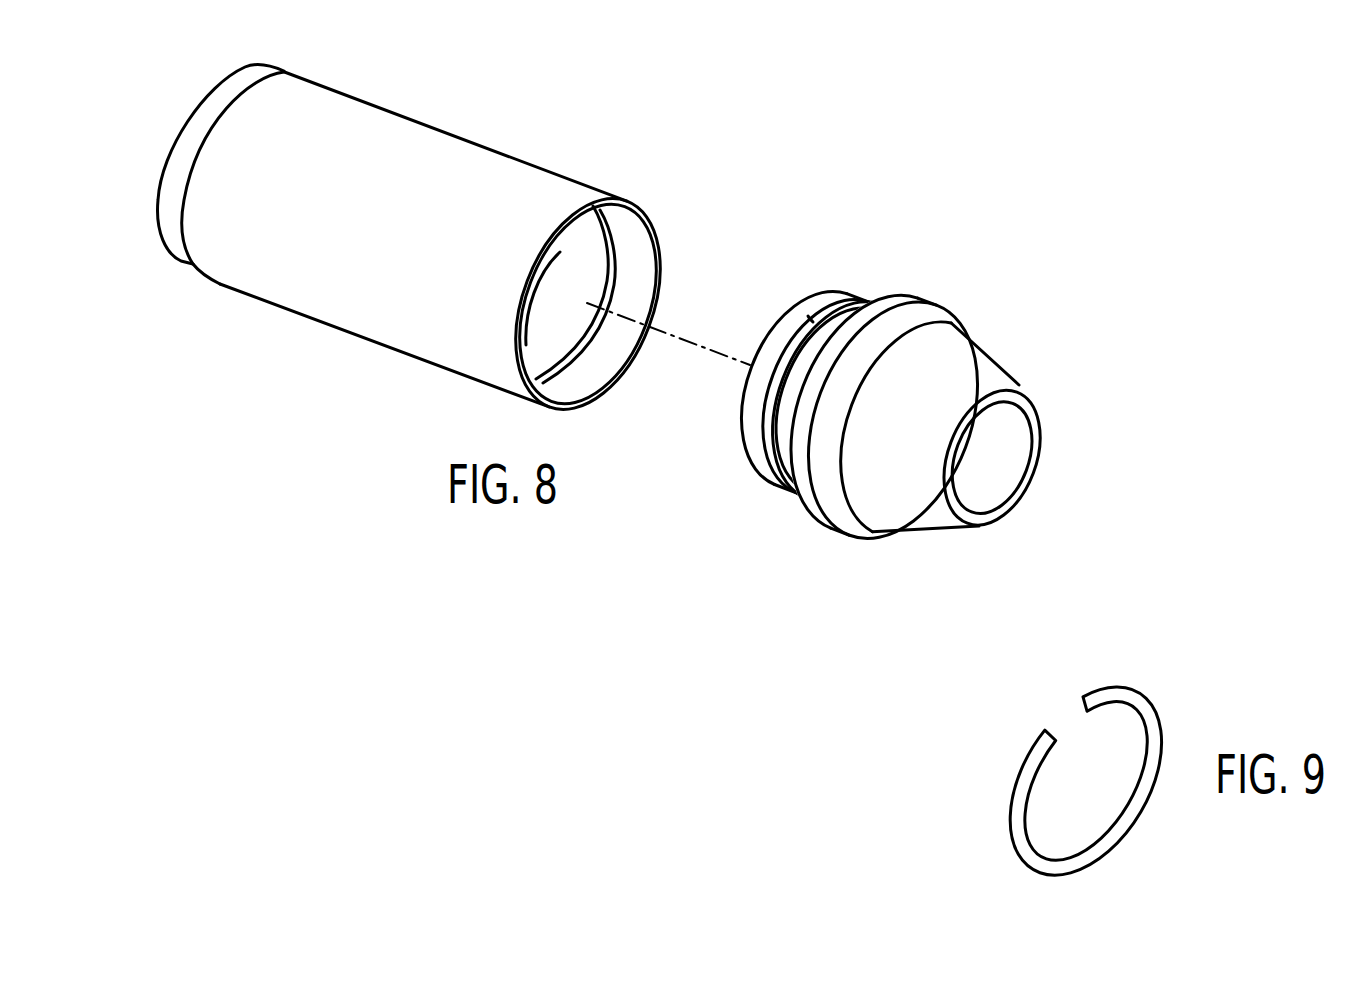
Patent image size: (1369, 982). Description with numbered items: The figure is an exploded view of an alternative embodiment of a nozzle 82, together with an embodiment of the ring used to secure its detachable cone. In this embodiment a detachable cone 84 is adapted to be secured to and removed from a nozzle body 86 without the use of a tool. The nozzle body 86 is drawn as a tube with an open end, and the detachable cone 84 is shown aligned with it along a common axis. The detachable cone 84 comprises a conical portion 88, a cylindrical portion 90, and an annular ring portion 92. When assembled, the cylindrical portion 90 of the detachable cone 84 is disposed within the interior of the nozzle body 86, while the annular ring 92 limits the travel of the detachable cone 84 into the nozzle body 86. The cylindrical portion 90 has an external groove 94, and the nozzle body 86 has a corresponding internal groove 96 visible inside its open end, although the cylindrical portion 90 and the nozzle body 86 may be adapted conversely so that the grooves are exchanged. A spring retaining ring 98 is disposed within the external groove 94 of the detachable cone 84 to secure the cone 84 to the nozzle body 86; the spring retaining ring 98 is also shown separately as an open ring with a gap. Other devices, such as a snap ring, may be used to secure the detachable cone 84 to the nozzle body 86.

In FIG. 8, the nozzle 82 is at (946, 140).
In FIG. 8, the detachable cone 84 is at (953, 373).
In FIG. 8, the nozzle body 86 is at (461, 131).
In FIG. 8, the conical portion 88 is at (913, 510).
In FIG. 8, the cylindrical portion 90 is at (762, 462).
In FIG. 8, the annular ring portion 92 is at (827, 523).
In FIG. 8, the external groove 94 is at (813, 322).
In FIG. 8, the internal groove 96 is at (626, 276).
In FIG. 8, the spring retaining ring 98 is at (855, 302).
In FIG. 9, the spring retaining ring 98 is at (1152, 708).